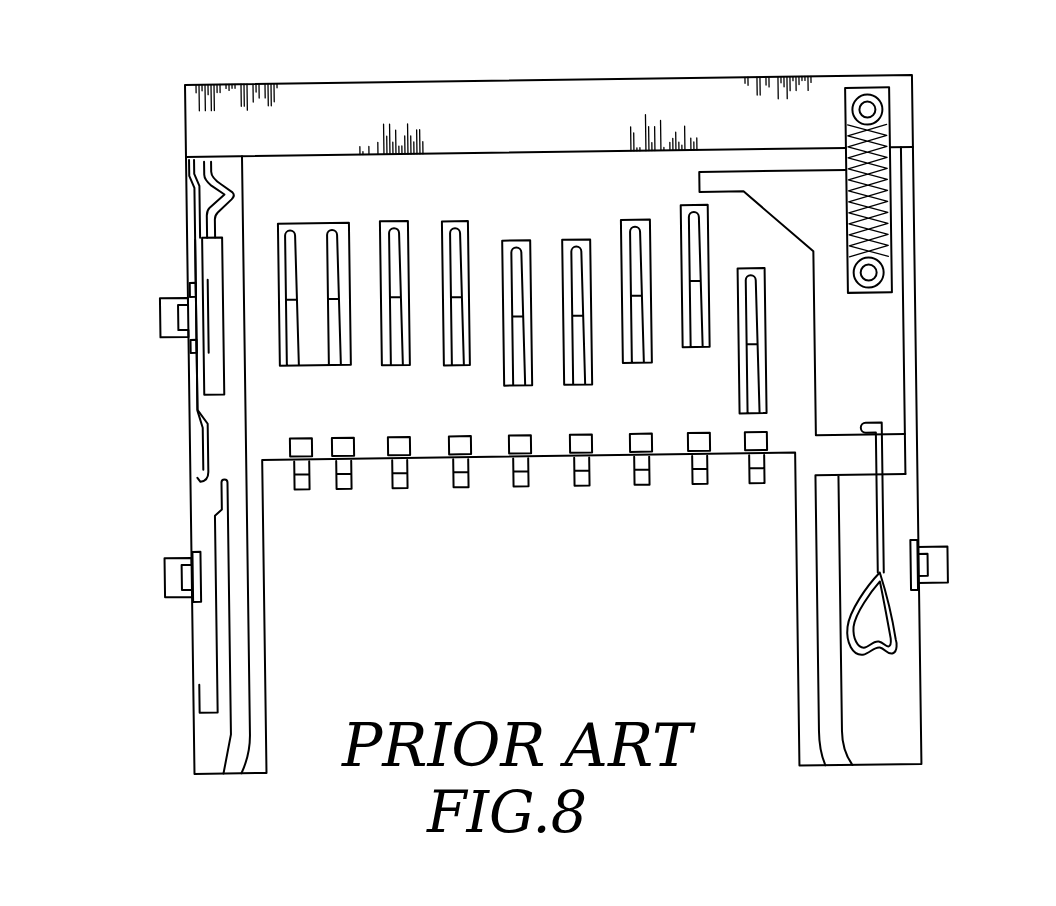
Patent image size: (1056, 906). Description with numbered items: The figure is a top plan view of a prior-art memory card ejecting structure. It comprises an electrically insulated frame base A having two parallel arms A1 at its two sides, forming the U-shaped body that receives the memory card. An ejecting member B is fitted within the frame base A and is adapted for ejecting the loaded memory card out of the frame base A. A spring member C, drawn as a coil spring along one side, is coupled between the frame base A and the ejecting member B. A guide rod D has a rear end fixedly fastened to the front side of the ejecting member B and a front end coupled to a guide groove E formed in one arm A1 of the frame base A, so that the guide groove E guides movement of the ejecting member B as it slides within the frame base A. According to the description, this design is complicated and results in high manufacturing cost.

The frame base A is at (167, 97).
The arm A1 is at (900, 732).
The ejecting member B is at (877, 332).
The spring member C is at (875, 192).
The guide rod D is at (877, 490).
The guide groove E is at (890, 648).